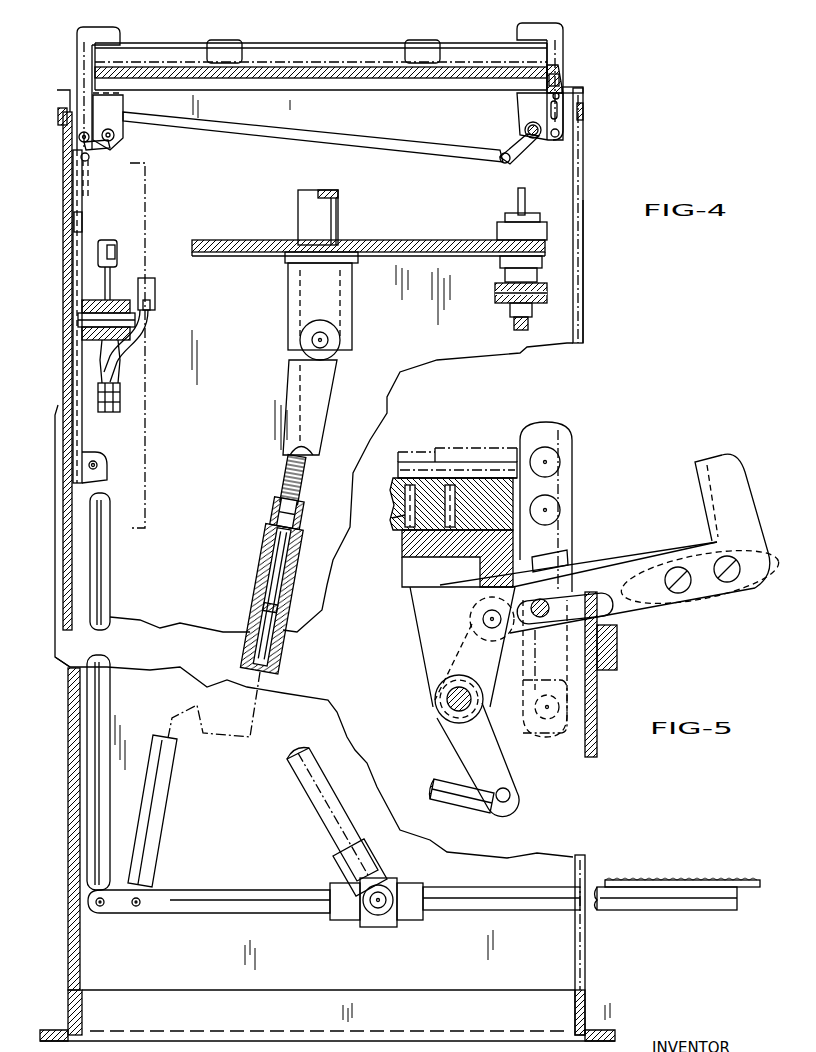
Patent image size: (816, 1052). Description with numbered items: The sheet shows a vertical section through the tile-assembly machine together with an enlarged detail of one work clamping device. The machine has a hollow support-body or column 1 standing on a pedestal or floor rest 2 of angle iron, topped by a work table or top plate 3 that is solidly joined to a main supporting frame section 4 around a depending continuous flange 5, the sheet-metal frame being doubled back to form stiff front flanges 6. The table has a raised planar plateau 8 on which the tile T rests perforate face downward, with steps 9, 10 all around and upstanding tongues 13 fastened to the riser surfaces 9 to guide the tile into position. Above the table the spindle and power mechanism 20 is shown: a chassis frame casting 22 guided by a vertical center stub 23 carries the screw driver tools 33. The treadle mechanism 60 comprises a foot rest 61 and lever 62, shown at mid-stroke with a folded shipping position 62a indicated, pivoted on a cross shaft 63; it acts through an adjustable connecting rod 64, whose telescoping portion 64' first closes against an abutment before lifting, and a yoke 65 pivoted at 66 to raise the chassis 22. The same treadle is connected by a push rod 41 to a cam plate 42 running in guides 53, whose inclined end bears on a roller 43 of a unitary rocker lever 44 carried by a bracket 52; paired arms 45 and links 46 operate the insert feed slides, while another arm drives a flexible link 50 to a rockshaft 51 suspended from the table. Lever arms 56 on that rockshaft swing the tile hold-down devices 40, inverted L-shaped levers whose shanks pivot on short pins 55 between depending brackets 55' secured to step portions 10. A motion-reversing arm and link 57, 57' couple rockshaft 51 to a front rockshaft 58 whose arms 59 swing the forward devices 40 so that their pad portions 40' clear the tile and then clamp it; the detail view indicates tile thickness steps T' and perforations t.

In FIG. 4, the support-body or column 1 is at (58, 520).
In FIG. 4, the pedestal or floor rest 2 is at (86, 1003).
In FIG. 4, the work table or top plate 3 is at (90, 13).
In FIG. 5, the work table or top plate 3 is at (400, 560).
In FIG. 4, the main supporting frame section 4 is at (172, 624).
In FIG. 4, the depending continuous flange 5 is at (56, 113).
In FIG. 5, the depending continuous flange 5 is at (618, 660).
In FIG. 4, the front flange 6 is at (585, 296).
In FIG. 5, the front flange 6 is at (598, 702).
In FIG. 4, the plateau 8 is at (365, 64).
In FIG. 4, the step riser surface 9 is at (550, 74).
In FIG. 5, the step riser surface 9 is at (515, 545).
In FIG. 4, the step portion 10 is at (575, 86).
In FIG. 5, the step portion 10 is at (598, 565).
In FIG. 4, the upstanding tongue 13 is at (238, 30).
In FIG. 4, the spindle and power mechanism 20 is at (276, 240).
In FIG. 4, the chassis frame casting 22 is at (412, 240).
In FIG. 4, the vertical center stub 23 is at (338, 210).
In FIG. 4, the screw driver tool 33 is at (526, 203).
In FIG. 4, the tile hold-down device 40 is at (318, 86).
In FIG. 5, the tile hold-down device 40 is at (645, 579).
In FIG. 4, the pad portion 40' is at (319, 27).
In FIG. 5, the pad portion 40' is at (685, 501).
In FIG. 4, the push rod 41 is at (104, 583).
In FIG. 4, the cam plate 42 is at (70, 290).
In FIG. 4, the roller 43 is at (70, 218).
In FIG. 4, the unitary rocker lever 44 is at (100, 335).
In FIG. 4, the paired arms 45 is at (116, 252).
In FIG. 4, the link 46 is at (110, 240).
In FIG. 4, the flexible link 50 is at (90, 190).
In FIG. 4, the rockshaft 51 is at (108, 142).
In FIG. 4, the bracket 52 is at (143, 300).
In FIG. 4, the guide 53 is at (82, 428).
In FIG. 4, the short pin 55 is at (587, 92).
In FIG. 5, the short pin 55 is at (565, 580).
In FIG. 4, the depending bracket 55' is at (588, 62).
In FIG. 5, the depending bracket 55' is at (569, 540).
In FIG. 4, the lever arm 56 is at (80, 141).
In FIG. 4, the motion-reversing arm 57 is at (316, 137).
In FIG. 5, the motion-reversing arm 57 is at (462, 804).
In FIG. 4, the link 57' is at (280, 142).
In FIG. 5, the link 57' is at (488, 702).
In FIG. 4, the front rockshaft 58 is at (533, 139).
In FIG. 5, the front rockshaft 58 is at (445, 702).
In FIG. 4, the arm 59 is at (559, 135).
In FIG. 5, the arm 59 is at (515, 630).
In FIG. 4, the treadle mechanism 60 is at (282, 845).
In FIG. 4, the foot rest 61 is at (690, 880).
In FIG. 4, the treadle lever 62 is at (515, 898).
In FIG. 4, the folded-in position of treadle lever 62a is at (330, 780).
In FIG. 4, the cross shaft 63 is at (378, 915).
In FIG. 4, the adjustable connecting rod 64 is at (256, 596).
In FIG. 4, the telescoping portion 64' is at (245, 594).
In FIG. 4, the yoke 65 is at (288, 396).
In FIG. 4, the pivot 66 is at (312, 340).
In FIG. 4, the tile T is at (321, 27).
In FIG. 5, the tile T is at (434, 504).
In FIG. 5, the tile thickness T' is at (416, 452).
In FIG. 5, the perforation t is at (392, 518).